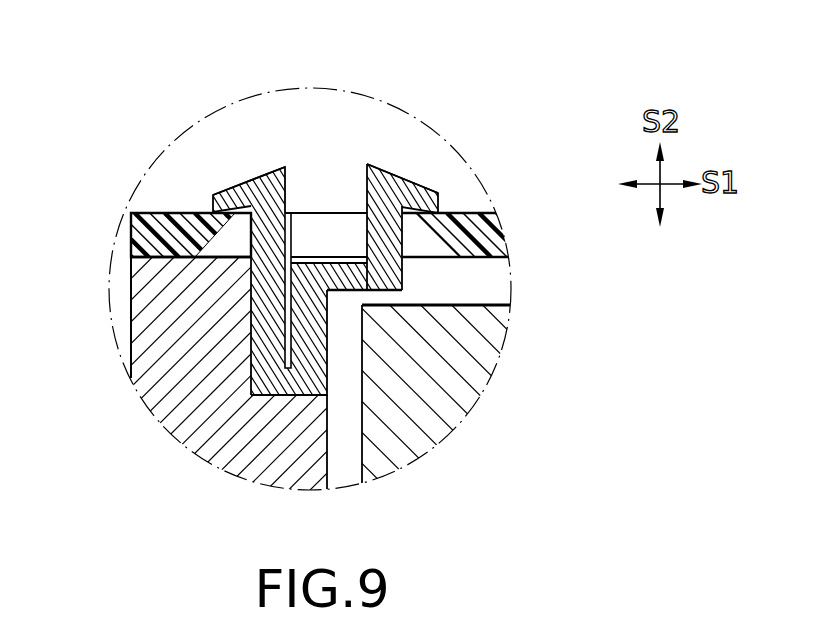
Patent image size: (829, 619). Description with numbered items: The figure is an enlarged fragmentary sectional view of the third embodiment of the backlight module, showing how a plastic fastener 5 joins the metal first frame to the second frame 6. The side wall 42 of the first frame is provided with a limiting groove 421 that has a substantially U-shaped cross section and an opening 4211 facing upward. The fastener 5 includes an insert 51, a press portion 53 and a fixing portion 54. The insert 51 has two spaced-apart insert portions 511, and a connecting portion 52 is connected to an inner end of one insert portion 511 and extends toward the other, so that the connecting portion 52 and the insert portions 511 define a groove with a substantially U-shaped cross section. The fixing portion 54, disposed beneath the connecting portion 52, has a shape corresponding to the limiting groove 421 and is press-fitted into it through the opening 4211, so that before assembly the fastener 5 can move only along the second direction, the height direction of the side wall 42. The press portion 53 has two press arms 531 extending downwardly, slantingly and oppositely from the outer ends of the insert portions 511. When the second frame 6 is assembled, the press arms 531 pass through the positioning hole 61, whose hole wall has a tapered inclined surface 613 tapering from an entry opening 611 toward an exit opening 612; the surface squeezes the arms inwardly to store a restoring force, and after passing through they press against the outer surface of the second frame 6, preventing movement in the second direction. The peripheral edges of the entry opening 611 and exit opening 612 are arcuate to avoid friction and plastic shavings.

The fastener 5 is at (292, 112).
The second frame 6 is at (144, 213).
The positioning hole 61 is at (200, 240).
The entry opening 611 is at (145, 258).
The exit opening 612 is at (220, 248).
The tapered inclined surface 613 is at (433, 243).
The press portion 53 is at (229, 150).
The press arm 531 is at (273, 167).
The connecting portion 52 is at (338, 212).
The opening 4211 is at (289, 240).
The limiting groove 421 is at (250, 370).
The side wall 42 is at (180, 423).
The fixing portion 54 is at (250, 333).
The insert portion 511 is at (180, 300).
The insert 51 is at (424, 263).